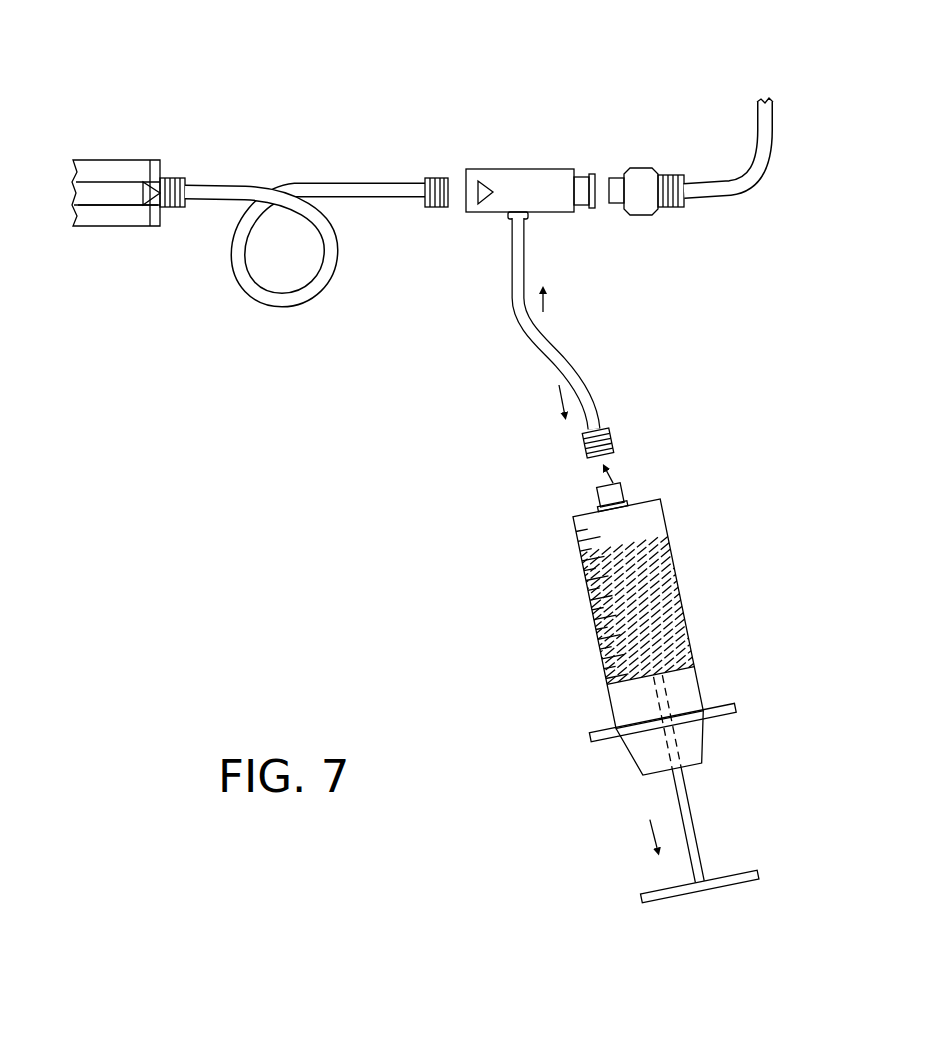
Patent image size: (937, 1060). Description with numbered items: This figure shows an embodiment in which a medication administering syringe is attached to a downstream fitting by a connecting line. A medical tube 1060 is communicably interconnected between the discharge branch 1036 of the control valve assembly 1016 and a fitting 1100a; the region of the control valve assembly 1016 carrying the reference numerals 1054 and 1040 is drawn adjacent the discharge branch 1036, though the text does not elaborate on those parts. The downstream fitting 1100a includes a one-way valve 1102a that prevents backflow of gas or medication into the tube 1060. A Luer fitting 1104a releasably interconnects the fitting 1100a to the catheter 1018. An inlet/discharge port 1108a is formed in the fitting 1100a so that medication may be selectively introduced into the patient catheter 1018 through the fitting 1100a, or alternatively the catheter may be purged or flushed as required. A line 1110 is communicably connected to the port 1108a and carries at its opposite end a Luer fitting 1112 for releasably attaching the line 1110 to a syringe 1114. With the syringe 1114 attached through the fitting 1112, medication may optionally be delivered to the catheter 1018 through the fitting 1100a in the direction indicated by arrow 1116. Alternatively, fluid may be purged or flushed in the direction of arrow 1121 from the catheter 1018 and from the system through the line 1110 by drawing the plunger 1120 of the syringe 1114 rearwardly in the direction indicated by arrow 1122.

The control valve assembly 1016 is at (95, 160).
The check valve 1054 is at (143, 190).
The discharge branch 1036 is at (150, 160).
The lumen 1040 is at (122, 206).
The medical tube 1060 is at (438, 180).
The one-way valve 1102a is at (474, 197).
The fitting 1100a is at (512, 168).
The Luer fitting 1104a is at (590, 173).
The inlet/discharge port 1108a is at (528, 216).
The catheter 1018 is at (757, 132).
The line 1110 is at (537, 352).
The arrow 1116 is at (547, 307).
The arrow 1121 is at (558, 403).
The Luer fitting 1112 is at (582, 445).
The syringe 1114 is at (595, 622).
The plunger 1120 is at (693, 838).
The arrow 1122 is at (650, 835).